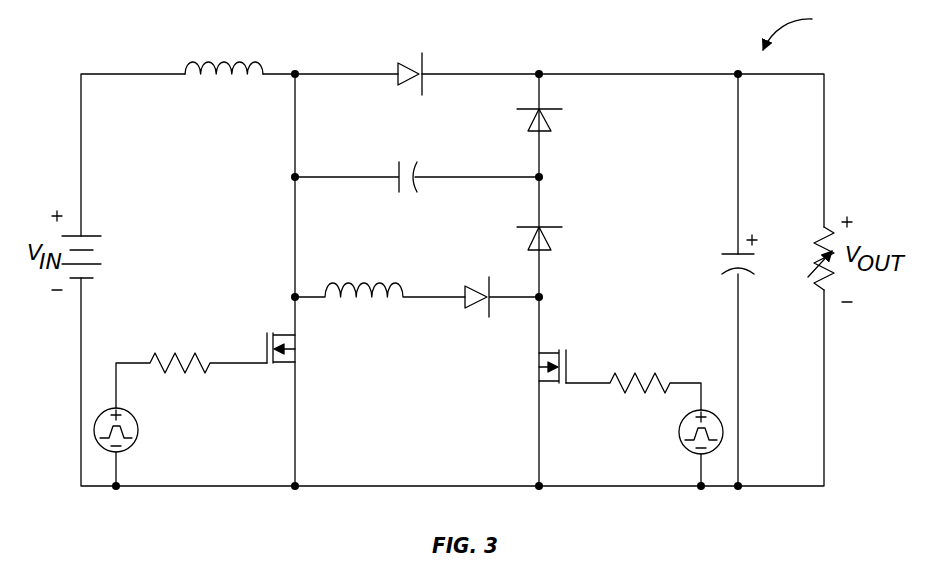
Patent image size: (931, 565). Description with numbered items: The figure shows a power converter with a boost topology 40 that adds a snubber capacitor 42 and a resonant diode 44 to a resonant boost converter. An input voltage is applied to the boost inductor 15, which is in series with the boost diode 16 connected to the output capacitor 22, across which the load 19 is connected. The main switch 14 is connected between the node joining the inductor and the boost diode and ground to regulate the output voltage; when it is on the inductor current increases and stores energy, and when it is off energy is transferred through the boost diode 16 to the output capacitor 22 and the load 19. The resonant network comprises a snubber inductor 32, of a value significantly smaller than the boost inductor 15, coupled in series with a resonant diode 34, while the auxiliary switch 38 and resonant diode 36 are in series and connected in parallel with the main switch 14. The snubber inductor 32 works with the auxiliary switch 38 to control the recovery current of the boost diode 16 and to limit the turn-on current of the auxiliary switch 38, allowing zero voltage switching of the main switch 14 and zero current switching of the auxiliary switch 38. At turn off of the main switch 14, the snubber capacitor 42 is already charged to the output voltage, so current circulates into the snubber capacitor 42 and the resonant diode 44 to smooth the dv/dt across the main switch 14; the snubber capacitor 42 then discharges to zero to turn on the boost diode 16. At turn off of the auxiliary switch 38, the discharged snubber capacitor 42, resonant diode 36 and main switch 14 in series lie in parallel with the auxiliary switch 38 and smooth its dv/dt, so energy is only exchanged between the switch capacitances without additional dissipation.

The main switch 14 is at (293, 352).
The boost inductor 15 is at (229, 59).
The boost diode 16 is at (408, 63).
The load 19 is at (812, 254).
The output capacitor 22 is at (735, 253).
The snubber inductor 32 is at (371, 281).
The resonant diode 34 is at (478, 285).
The resonant diode 36 is at (551, 240).
The auxiliary switch 38 is at (538, 373).
The boost topology 40 is at (803, 31).
The snubber capacitor 42 is at (398, 168).
The resonant diode 44 is at (548, 118).